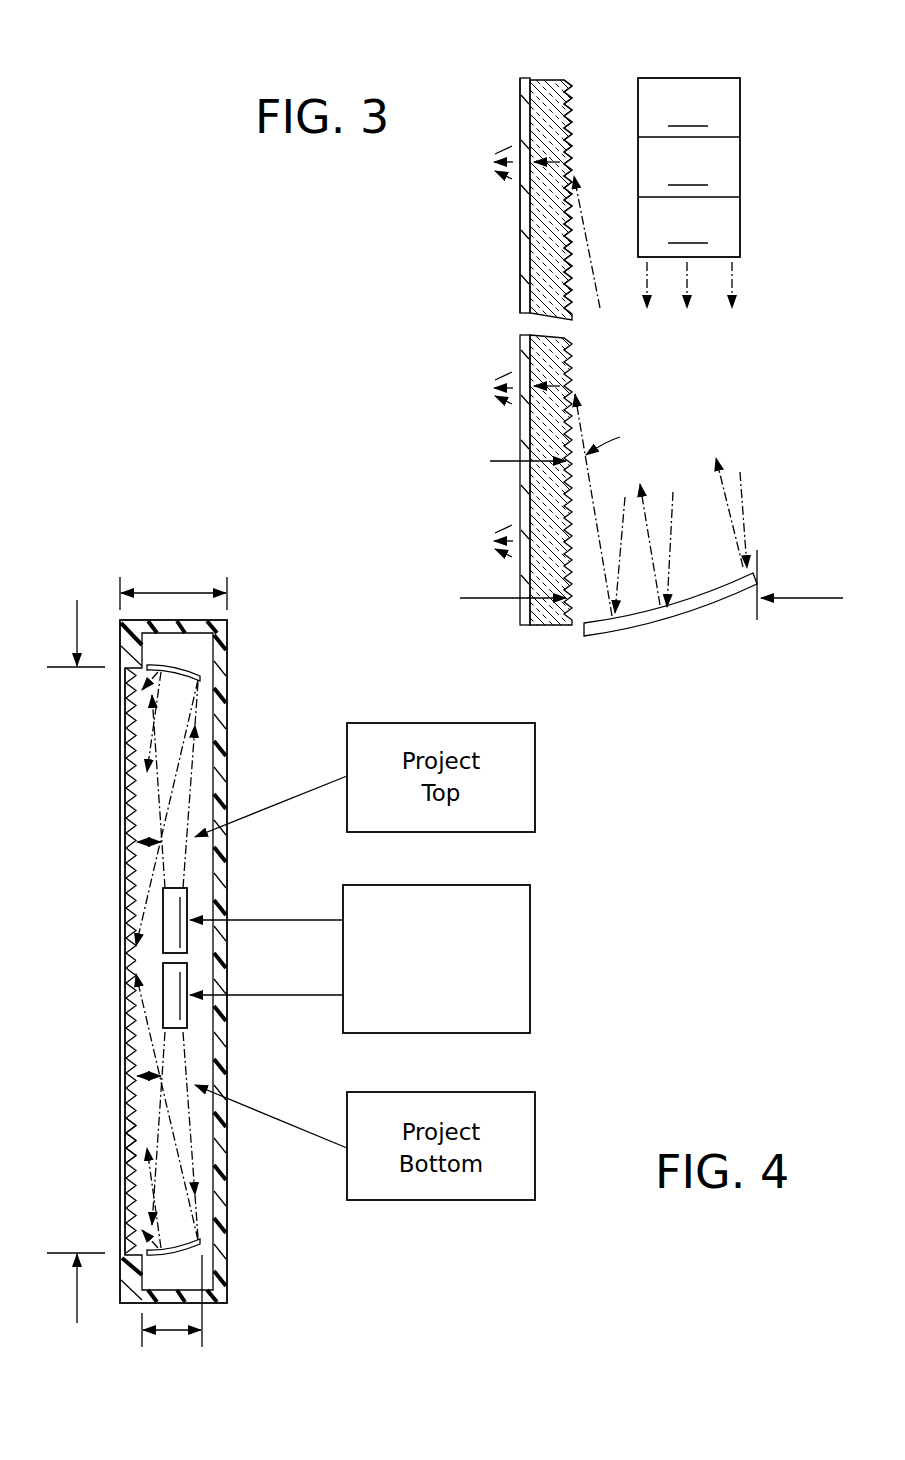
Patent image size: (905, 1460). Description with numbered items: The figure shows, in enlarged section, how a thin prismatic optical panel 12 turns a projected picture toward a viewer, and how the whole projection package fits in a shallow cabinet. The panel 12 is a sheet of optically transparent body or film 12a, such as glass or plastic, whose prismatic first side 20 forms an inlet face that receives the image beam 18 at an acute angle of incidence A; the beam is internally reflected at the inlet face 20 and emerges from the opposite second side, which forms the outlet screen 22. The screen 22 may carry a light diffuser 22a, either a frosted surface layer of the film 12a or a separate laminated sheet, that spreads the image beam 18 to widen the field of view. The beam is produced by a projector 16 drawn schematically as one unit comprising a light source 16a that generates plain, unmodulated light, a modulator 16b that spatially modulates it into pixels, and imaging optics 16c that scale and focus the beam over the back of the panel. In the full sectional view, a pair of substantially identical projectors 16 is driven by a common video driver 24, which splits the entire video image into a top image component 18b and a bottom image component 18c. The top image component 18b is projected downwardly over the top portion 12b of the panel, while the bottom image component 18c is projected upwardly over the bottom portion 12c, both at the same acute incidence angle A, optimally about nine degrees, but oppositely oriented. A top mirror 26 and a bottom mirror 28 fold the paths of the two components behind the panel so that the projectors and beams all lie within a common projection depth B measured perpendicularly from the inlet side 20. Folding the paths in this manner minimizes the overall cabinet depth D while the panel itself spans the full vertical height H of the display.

In FIG. 3, the prismatic optical panel 12 is at (549, 76).
In FIG. 4, the prismatic optical panel 12 is at (117, 715).
In FIG. 3, the optically transparent body or film 12a is at (543, 208).
In FIG. 4, the top portion of the panel 12b is at (120, 778).
In FIG. 3, the bottom portion of the panel 12c is at (521, 492).
In FIG. 4, the bottom portion of the panel 12c is at (120, 1038).
In FIG. 3, the projector 16 is at (750, 82).
In FIG. 4, the projector 16 is at (187, 893).
In FIG. 3, the light source 16a is at (689, 119).
In FIG. 3, the modulator 16b is at (689, 178).
In FIG. 3, the imaging optics 16c is at (688, 230).
In FIG. 3, the image beam 18 is at (733, 268).
In FIG. 4, the image beam 18 is at (195, 740).
In FIG. 4, the top image component 18b is at (145, 888).
In FIG. 3, the bottom image component 18c is at (645, 513).
In FIG. 4, the bottom image component 18c is at (147, 1027).
In FIG. 3, the prismatic first side 20 is at (566, 104).
In FIG. 4, the prismatic first side 20 is at (148, 1133).
In FIG. 3, the outlet screen 22 is at (522, 263).
In FIG. 4, the outlet screen 22 is at (120, 1112).
In FIG. 3, the light diffuser 22a is at (522, 292).
In FIG. 4, the video driver 24 is at (530, 930).
In FIG. 4, the top mirror 26 is at (200, 665).
In FIG. 3, the bottom mirror 28 is at (702, 594).
In FIG. 4, the bottom mirror 28 is at (200, 1250).
In FIG. 3, the angle of incidence A is at (500, 461).
In FIG. 4, the angle of incidence A is at (148, 836).
In FIG. 3, the projection depth B is at (806, 598).
In FIG. 4, the projection depth B is at (172, 1335).
In FIG. 4, the cabinet depth D is at (176, 590).
In FIG. 4, the vertical height H is at (76, 1302).